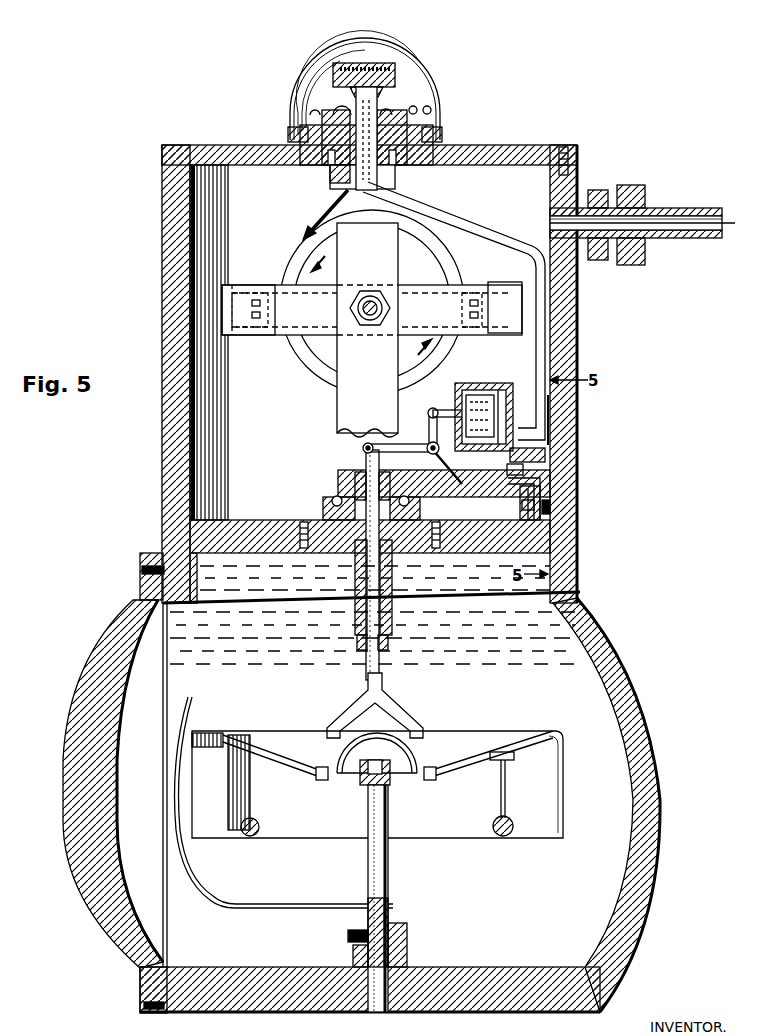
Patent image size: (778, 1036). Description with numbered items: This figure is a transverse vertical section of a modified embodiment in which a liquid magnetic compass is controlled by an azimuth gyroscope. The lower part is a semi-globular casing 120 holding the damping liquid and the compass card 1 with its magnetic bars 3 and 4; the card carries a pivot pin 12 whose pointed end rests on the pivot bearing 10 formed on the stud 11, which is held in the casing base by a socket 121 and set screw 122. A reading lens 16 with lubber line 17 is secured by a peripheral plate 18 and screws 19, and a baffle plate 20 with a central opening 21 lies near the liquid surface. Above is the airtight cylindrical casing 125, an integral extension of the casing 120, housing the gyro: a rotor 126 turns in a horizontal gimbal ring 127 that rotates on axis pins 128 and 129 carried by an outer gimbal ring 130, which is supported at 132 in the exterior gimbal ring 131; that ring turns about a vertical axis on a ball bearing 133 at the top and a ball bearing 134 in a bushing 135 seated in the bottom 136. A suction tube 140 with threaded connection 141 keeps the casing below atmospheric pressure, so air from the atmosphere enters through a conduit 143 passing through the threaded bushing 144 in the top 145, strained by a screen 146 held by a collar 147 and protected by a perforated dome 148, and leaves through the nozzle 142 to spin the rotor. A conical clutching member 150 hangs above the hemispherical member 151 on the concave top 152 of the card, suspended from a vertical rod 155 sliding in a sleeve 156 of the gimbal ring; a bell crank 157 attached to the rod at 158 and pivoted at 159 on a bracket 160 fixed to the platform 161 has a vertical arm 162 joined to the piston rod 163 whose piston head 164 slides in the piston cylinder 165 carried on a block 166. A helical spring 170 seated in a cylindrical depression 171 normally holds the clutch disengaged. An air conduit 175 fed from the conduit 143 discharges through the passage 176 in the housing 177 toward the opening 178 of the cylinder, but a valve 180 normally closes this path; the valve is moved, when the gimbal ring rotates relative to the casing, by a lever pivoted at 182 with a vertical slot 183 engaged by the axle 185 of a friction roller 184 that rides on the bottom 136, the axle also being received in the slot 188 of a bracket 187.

The compass card 1 is at (210, 838).
The magnetic bar 3 is at (246, 838).
The magnetic bar 4 is at (493, 826).
The pivot bearing 10 is at (392, 783).
The stud 11 is at (388, 868).
The pivot pin 12 is at (376, 781).
The reading lens 16 is at (74, 718).
The lubber line 17 is at (197, 712).
The peripheral plate 18 is at (140, 589).
The screws 19 is at (142, 568).
The baffle plate 20 is at (266, 603).
The central opening 21 is at (342, 600).
The casing 120 is at (655, 750).
The socket 121 is at (408, 945).
The set screw 122 is at (348, 936).
The cylindrical casing 125 is at (176, 332).
The rotor 126 is at (430, 275).
The horizontal gimbal ring 127 is at (283, 285).
The axis pin 128 is at (525, 308).
The axis pin 129 is at (222, 305).
The outer gimbal ring 130 is at (252, 335).
The exterior gimbal ring 131 is at (386, 188).
The bearing 132 is at (370, 300).
The ball bearing 133 is at (332, 178).
The ball bearing 134 is at (323, 503).
The bushing 135 is at (415, 500).
The bottom 136 is at (248, 541).
The suction tube 140 is at (683, 212).
The screw-threaded connection 141 is at (610, 202).
The air nozzle 142 is at (335, 198).
The conduit 143 is at (424, 84).
The screw-threaded bushing 144 is at (337, 128).
The top 145 is at (468, 150).
The screen 146 is at (365, 62).
The collar 147 is at (398, 74).
The perforated dome 148 is at (345, 60).
The conical clutching member 150 is at (347, 716).
The hemispherical member 151 is at (410, 758).
The concave top 152 is at (500, 730).
The vertical rod 155 is at (358, 630).
The sleeve 156 is at (392, 628).
The bell crank 157 is at (395, 432).
The pivot 158 is at (363, 447).
The pivot 159 is at (463, 483).
The bracket 160 is at (425, 460).
The platform 161 is at (541, 478).
The vertical arm 162 is at (430, 414).
The piston rod 163 is at (468, 383).
The piston head 164 is at (455, 396).
The piston cylinder 165 is at (500, 383).
The block 166 is at (523, 468).
The helical spring 170 is at (355, 470).
The cylindrical depression 171 is at (352, 487).
The air conduit 175 is at (512, 242).
The passage 176 is at (548, 422).
The housing 177 is at (548, 402).
The opening 178 is at (440, 440).
The valve 180 is at (549, 412).
The pivot 182 is at (545, 454).
The vertical slot 183 is at (375, 564).
The friction roller 184 is at (548, 522).
The roller axle 185 is at (520, 505).
The bracket 187 is at (541, 492).
The slot 188 is at (550, 507).